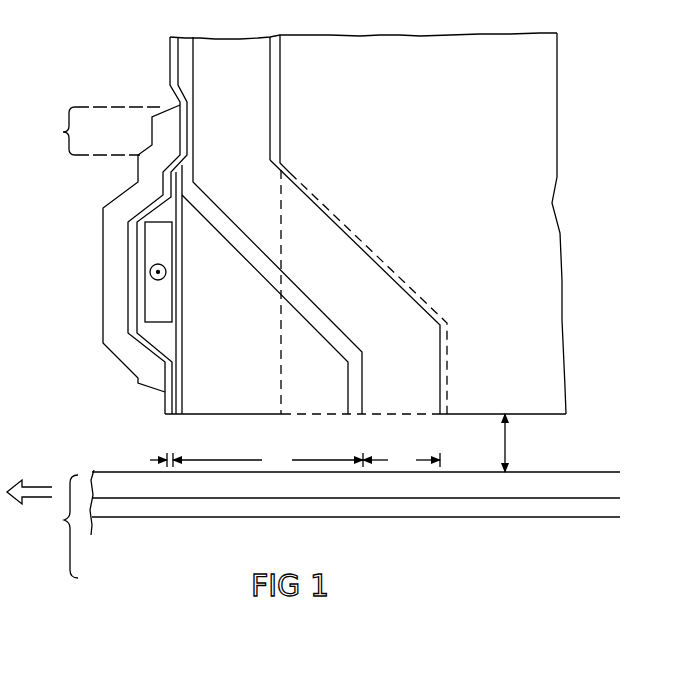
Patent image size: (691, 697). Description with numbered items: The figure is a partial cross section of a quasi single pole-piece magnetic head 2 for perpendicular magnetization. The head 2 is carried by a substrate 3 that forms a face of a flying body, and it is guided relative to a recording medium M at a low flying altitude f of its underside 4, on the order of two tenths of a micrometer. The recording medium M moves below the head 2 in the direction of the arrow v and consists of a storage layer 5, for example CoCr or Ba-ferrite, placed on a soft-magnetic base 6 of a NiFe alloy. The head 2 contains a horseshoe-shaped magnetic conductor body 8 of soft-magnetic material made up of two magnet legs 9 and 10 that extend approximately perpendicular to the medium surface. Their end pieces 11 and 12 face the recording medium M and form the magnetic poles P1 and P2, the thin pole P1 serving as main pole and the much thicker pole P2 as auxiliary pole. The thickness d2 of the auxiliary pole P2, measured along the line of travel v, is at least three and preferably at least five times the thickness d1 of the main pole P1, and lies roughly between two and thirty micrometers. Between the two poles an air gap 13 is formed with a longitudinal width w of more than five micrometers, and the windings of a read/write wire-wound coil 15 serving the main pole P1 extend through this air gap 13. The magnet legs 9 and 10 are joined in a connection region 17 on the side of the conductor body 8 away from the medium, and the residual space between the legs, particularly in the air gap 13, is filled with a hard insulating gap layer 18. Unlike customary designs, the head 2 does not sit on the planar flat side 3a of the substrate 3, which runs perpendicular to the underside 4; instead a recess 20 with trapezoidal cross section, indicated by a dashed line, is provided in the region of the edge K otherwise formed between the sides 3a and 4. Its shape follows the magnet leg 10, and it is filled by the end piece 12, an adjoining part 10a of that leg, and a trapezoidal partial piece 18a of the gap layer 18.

The magnetic head 2 is at (75, 426).
The substrate 3 is at (549, 328).
The planar flat side of substrate 3a is at (272, 90).
The underside of head 4 is at (548, 416).
The storage layer 5 is at (620, 472).
The soft-magnetic base 6 is at (620, 500).
The magnetic conductor body 8 is at (228, 50).
The magnet leg 9 is at (103, 254).
The magnet leg 10 is at (271, 134).
The part of magnet leg 10a is at (354, 265).
The end piece 11 is at (165, 407).
The end piece 12 is at (367, 416).
The air gap 13 is at (241, 418).
The read/write wire-wound coil 15 is at (158, 302).
The connection region 17 is at (97, 131).
The gap layer 18 is at (277, 225).
The partial piece of gap layer 18a is at (265, 304).
The recess 20 is at (422, 300).
The edge K is at (281, 416).
The main pole P1 is at (167, 415).
The auxiliary pole P2 is at (403, 415).
The thickness of main pole d1 is at (145, 459).
The thickness of auxiliary pole d2 is at (401, 459).
The longitudinal width of air gap w is at (268, 459).
The flying altitude f is at (507, 434).
The recording medium M is at (65, 524).
The line of travel v is at (29, 485).